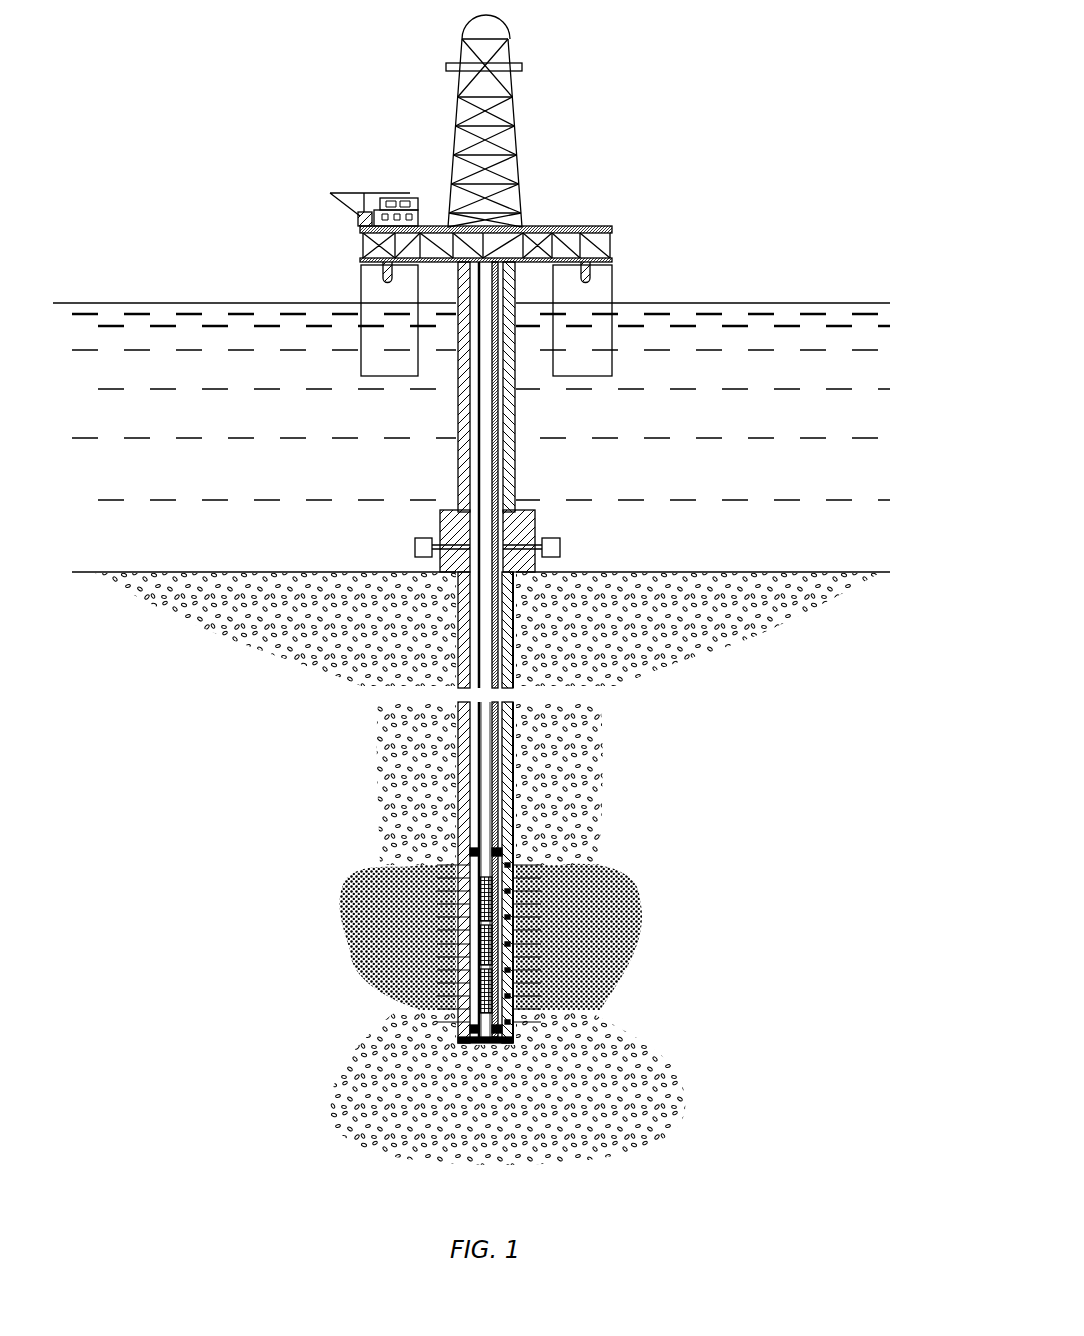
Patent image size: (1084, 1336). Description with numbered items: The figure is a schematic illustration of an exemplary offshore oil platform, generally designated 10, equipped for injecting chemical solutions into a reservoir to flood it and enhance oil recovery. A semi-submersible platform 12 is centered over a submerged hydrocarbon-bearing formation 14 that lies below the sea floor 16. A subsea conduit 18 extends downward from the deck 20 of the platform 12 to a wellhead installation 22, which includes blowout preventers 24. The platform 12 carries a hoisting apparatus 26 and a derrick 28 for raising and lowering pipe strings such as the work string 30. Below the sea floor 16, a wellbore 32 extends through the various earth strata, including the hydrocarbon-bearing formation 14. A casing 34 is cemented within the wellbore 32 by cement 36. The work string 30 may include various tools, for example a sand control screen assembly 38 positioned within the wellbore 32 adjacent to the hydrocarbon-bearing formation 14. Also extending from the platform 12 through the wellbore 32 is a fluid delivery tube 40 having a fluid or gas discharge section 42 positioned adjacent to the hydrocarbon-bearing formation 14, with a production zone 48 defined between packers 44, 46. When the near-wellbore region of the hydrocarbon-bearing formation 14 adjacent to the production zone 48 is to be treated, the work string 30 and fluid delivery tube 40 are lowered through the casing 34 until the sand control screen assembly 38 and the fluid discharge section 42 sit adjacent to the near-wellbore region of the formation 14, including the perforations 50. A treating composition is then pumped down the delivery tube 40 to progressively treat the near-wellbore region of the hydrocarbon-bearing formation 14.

The offshore oil platform 10 is at (288, 115).
The semi-submersible platform 12 is at (606, 228).
The hydrocarbon-bearing formation 14 is at (383, 930).
The sea floor 16 is at (740, 576).
The subsea conduit 18 is at (460, 468).
The deck 20 is at (608, 260).
The wellhead installation 22 is at (442, 526).
The blowout preventers 24 is at (560, 548).
The hoisting apparatus 26 is at (495, 212).
The derrick 28 is at (508, 52).
The work string 30 is at (497, 468).
The wellbore 32 is at (522, 752).
The casing 34 is at (468, 760).
The cement 36 is at (528, 778).
The sand control screen assembly 38 is at (470, 955).
The fluid delivery tube 40 is at (500, 808).
The fluid or gas discharge section 42 is at (515, 1015).
The packer 44 is at (510, 848).
The packer 46 is at (515, 1028).
The production zone 48 is at (512, 881).
The perforations 50 is at (440, 998).